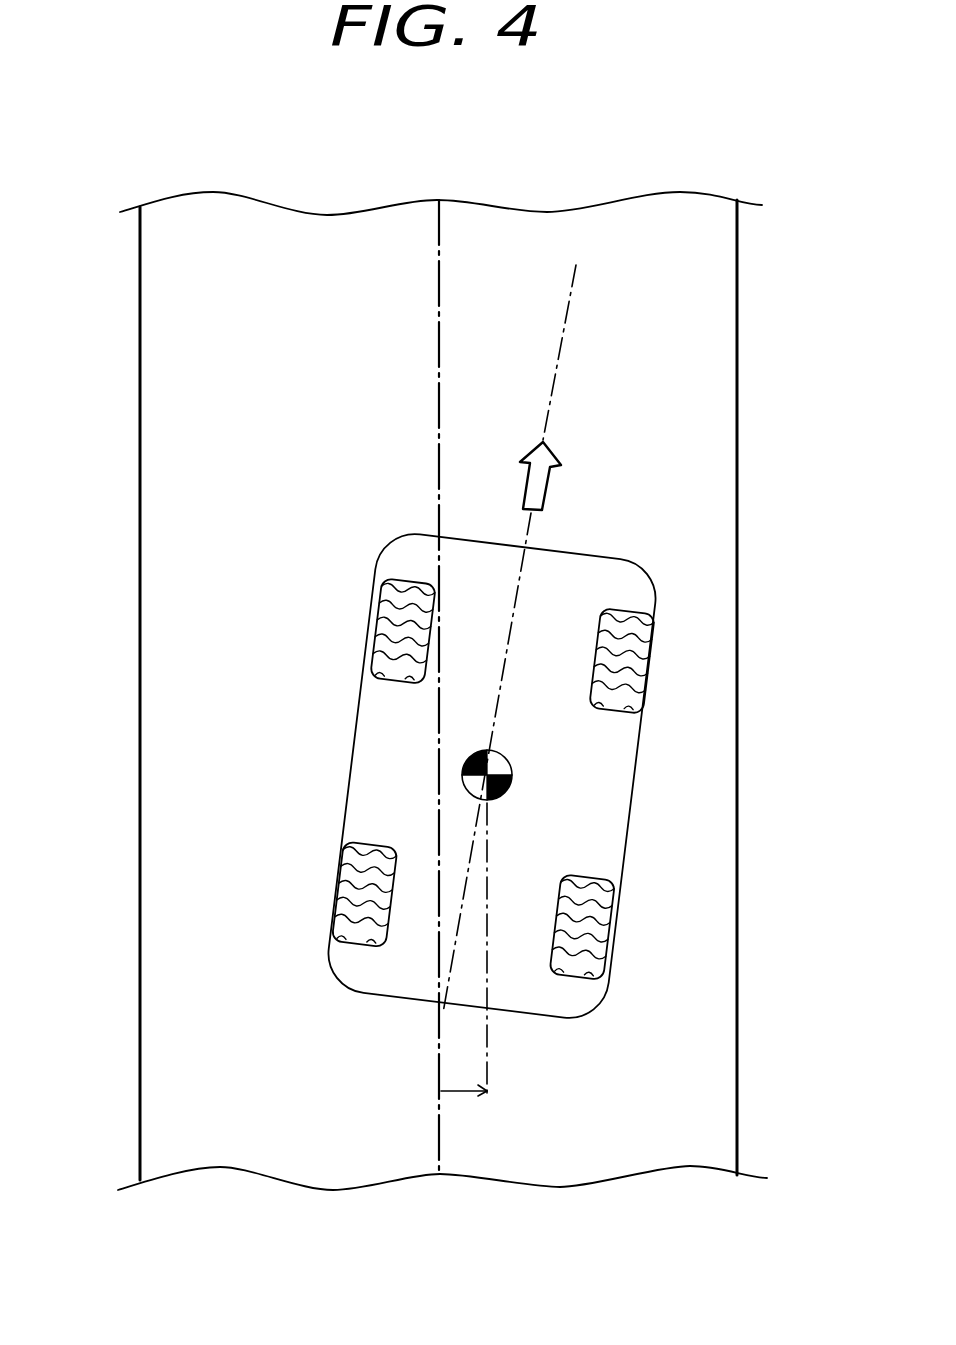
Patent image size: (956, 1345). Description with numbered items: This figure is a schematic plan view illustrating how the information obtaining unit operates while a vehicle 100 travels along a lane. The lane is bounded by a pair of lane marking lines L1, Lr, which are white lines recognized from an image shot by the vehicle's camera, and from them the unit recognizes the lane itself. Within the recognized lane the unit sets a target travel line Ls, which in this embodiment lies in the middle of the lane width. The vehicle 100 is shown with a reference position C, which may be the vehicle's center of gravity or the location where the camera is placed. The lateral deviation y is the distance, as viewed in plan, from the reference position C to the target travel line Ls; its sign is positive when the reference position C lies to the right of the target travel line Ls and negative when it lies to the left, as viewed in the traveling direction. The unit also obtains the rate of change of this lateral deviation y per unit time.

The vehicle 100 is at (360, 738).
The lane marking line L1 is at (140, 478).
The lane marking line Lr is at (737, 475).
The target travel line Ls is at (438, 353).
The reference position C is at (513, 770).
The lateral deviation y is at (458, 1093).